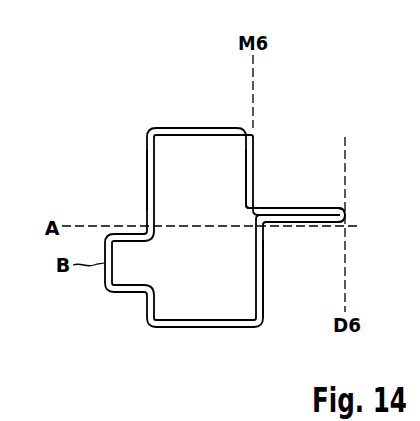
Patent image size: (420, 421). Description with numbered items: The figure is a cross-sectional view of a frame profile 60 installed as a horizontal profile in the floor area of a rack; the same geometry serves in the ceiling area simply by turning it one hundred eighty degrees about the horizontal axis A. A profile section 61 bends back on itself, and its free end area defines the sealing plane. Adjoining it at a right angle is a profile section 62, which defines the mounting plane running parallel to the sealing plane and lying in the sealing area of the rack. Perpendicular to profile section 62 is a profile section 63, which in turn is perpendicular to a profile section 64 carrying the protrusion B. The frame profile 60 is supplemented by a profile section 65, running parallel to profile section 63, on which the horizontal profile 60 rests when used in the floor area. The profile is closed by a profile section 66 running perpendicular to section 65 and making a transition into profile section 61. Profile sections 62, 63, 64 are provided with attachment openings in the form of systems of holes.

The frame profile 60 is at (304, 74).
The profile section 61 is at (328, 223).
The profile section 62 is at (256, 171).
The profile section 63 is at (203, 128).
The profile section 64 is at (147, 172).
The profile section 65 is at (203, 328).
The profile section 66 is at (264, 293).